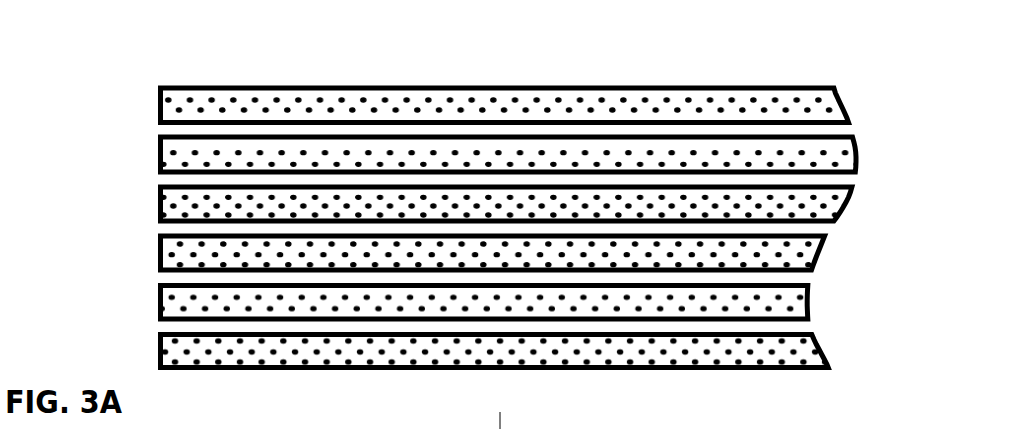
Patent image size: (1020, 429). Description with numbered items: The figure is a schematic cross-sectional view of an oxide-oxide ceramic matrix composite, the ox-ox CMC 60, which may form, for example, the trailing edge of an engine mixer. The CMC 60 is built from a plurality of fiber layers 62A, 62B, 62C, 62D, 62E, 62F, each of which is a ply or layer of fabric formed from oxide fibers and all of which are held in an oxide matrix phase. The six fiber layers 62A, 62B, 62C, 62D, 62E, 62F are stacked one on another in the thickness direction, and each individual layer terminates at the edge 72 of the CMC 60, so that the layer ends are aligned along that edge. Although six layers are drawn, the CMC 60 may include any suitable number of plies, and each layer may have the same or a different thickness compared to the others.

The ox-ox CMC 60 is at (803, 58).
The edge 72 is at (157, 72).
The fiber layer 62A is at (158, 110).
The fiber layer 62B is at (158, 155).
The fiber layer 62C is at (158, 205).
The fiber layer 62D is at (158, 257).
The fiber layer 62E is at (158, 303).
The fiber layer 62F is at (158, 353).